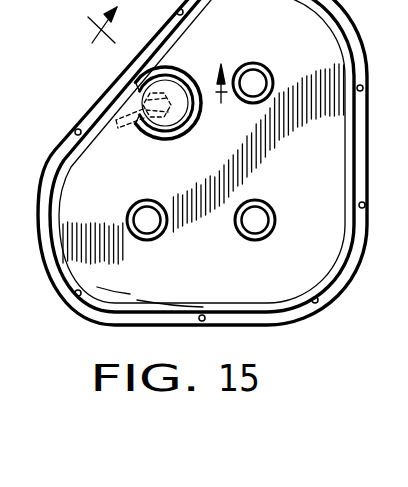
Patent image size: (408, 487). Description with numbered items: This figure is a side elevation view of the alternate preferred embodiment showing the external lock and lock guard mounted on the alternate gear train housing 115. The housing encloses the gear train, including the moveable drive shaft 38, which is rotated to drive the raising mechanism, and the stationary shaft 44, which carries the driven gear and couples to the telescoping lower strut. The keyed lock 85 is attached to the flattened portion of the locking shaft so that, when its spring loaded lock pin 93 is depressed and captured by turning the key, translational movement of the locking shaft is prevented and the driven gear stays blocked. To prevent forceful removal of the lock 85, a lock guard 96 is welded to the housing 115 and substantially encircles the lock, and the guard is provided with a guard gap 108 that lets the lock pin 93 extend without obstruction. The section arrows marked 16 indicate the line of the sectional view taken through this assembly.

The section line 16- 16 is at (150, 67).
The moveable drive shaft 38 is at (145, 222).
The stationary shaft 44 is at (255, 82).
The lock 85 is at (172, 88).
The lock pin 93 is at (118, 92).
The lock guard 96 is at (183, 128).
The guard gap 108 is at (130, 128).
The alternate gear train housing 115 is at (63, 283).